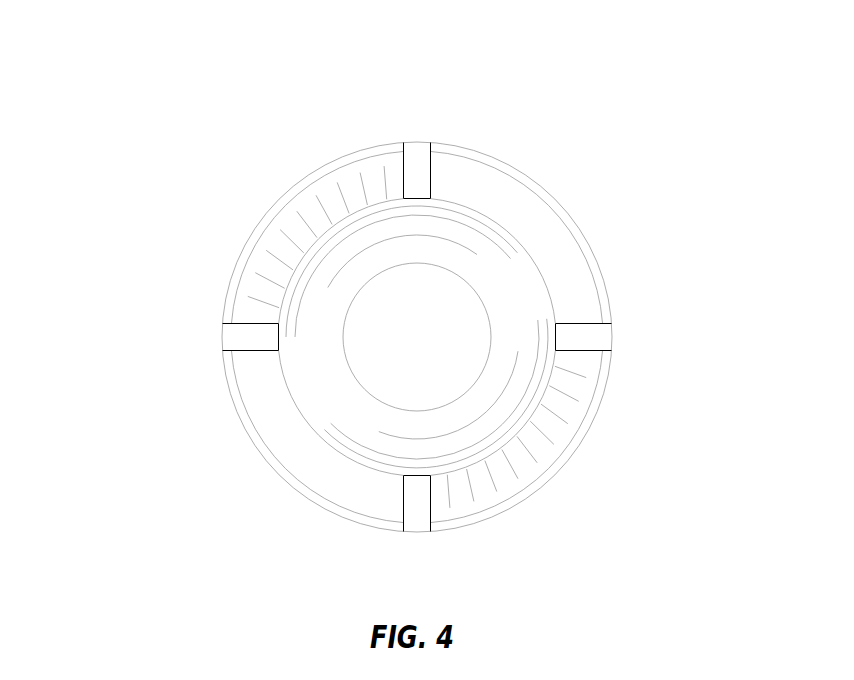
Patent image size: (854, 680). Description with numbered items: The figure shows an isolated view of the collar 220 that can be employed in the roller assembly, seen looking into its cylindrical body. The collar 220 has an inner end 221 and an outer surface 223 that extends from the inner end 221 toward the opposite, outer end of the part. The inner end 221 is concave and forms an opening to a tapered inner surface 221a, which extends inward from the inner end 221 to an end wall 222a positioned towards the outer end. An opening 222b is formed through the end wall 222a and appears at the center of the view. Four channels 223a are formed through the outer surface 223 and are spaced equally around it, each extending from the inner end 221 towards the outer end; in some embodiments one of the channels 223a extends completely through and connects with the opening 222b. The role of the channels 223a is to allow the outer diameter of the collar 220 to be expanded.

The collar 220 is at (147, 168).
The inner end 221 is at (237, 418).
The tapered inner surface 221a is at (317, 475).
The end wall 222a is at (505, 297).
The opening 222b is at (478, 383).
The outer surface 223 is at (560, 203).
The channels 223a is at (412, 143).